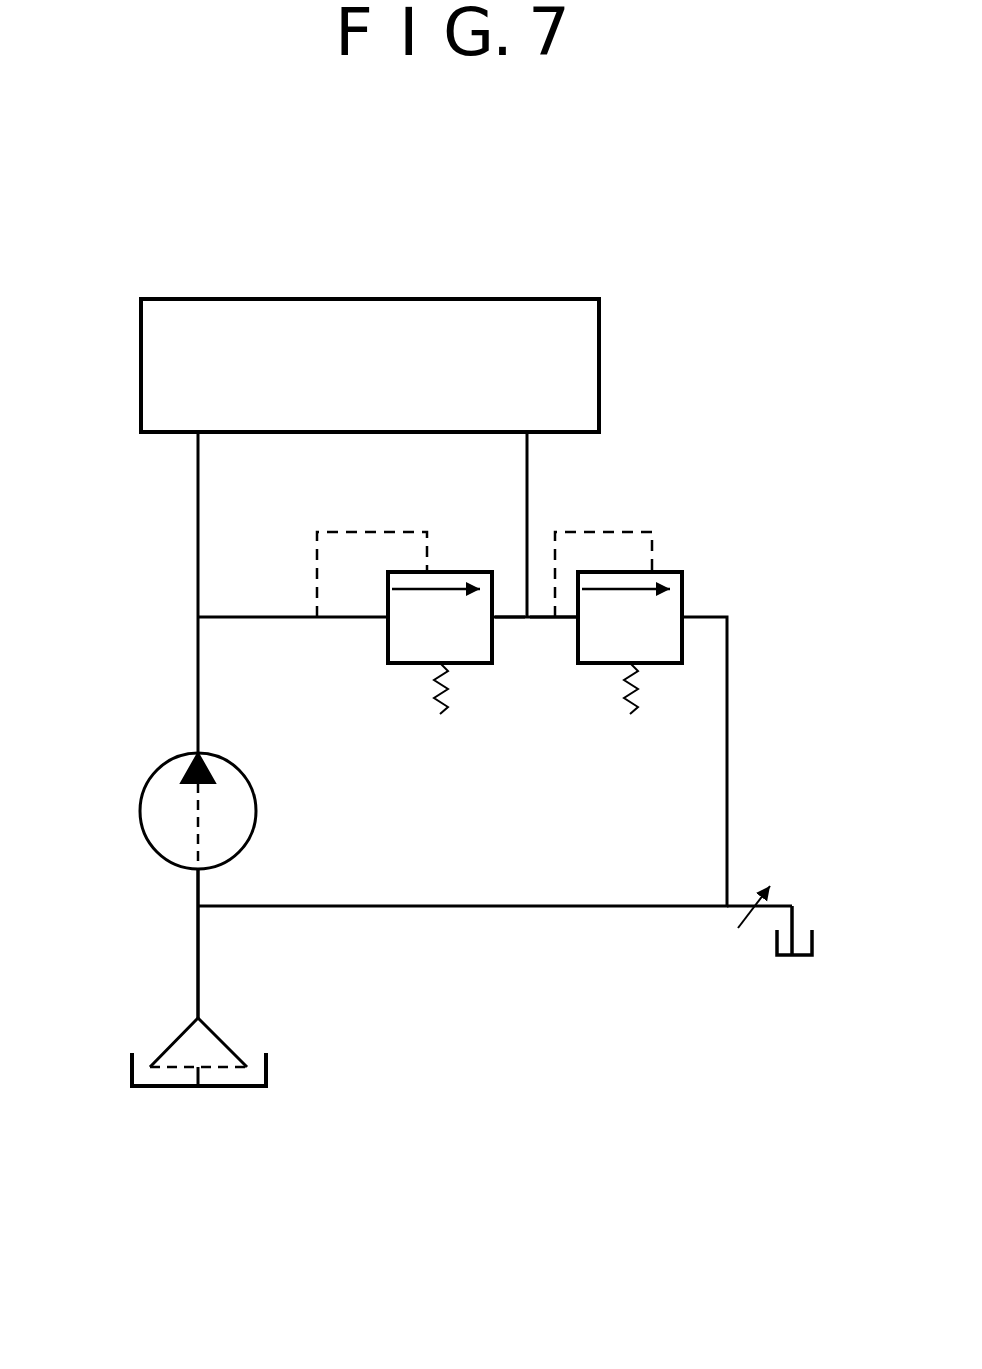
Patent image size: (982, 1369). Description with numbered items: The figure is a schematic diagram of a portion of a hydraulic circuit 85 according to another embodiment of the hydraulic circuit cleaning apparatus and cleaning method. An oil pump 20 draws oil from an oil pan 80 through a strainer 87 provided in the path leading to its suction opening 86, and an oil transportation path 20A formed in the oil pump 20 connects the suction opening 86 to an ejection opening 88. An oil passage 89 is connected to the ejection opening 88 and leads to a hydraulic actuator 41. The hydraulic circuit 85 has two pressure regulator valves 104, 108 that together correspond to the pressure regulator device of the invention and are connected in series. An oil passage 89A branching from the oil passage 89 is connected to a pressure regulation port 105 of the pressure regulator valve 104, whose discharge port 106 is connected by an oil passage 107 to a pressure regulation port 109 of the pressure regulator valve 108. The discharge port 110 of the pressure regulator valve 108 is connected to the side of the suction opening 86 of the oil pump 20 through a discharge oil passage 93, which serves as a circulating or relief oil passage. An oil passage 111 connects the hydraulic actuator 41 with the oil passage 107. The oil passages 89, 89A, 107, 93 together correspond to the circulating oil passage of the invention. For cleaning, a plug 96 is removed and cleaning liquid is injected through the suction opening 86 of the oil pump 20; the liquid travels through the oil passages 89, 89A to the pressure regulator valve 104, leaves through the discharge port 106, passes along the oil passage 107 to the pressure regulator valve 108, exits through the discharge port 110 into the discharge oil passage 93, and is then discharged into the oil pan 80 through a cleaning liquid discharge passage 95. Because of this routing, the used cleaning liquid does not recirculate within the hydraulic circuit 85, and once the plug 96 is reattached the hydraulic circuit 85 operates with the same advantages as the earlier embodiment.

The hydraulic actuator 41 is at (593, 384).
The oil passage 89 is at (197, 542).
The oil passage 89A is at (258, 617).
The oil passage 111 is at (527, 470).
The oil passage 107 is at (518, 612).
The discharge port 106 is at (493, 617).
The pressure regulation port 109 is at (572, 620).
The pressure regulator valve 104 is at (391, 671).
The pressure regulation port 105 is at (387, 617).
The pressure regulator valve 108 is at (670, 656).
The discharge port 110 is at (683, 612).
The discharge oil passage 93 is at (412, 907).
The oil pump 20 is at (224, 777).
The ejection opening 88 is at (197, 752).
The oil transportation path 20A is at (197, 828).
The suction opening 86 is at (180, 903).
The strainer 87 is at (212, 1035).
The oil pan 80 is at (268, 1072).
The plug 96 is at (736, 904).
The cleaning liquid discharge passage 95 is at (780, 903).
The hydraulic circuit 85 is at (488, 988).